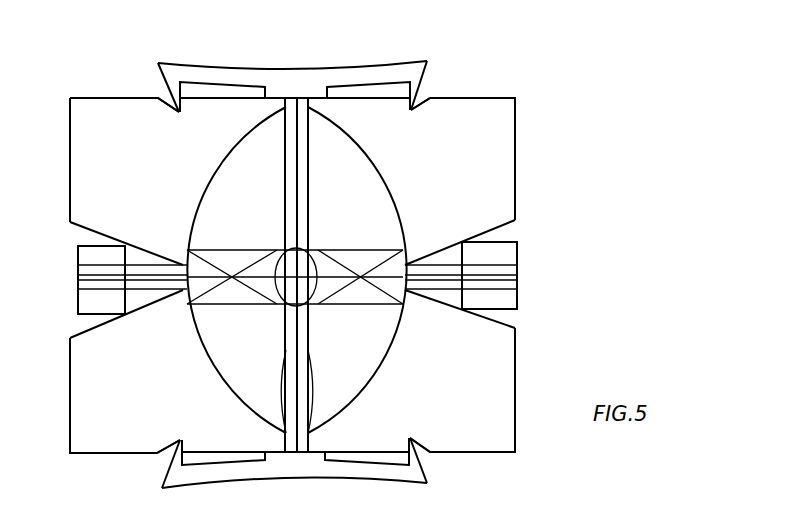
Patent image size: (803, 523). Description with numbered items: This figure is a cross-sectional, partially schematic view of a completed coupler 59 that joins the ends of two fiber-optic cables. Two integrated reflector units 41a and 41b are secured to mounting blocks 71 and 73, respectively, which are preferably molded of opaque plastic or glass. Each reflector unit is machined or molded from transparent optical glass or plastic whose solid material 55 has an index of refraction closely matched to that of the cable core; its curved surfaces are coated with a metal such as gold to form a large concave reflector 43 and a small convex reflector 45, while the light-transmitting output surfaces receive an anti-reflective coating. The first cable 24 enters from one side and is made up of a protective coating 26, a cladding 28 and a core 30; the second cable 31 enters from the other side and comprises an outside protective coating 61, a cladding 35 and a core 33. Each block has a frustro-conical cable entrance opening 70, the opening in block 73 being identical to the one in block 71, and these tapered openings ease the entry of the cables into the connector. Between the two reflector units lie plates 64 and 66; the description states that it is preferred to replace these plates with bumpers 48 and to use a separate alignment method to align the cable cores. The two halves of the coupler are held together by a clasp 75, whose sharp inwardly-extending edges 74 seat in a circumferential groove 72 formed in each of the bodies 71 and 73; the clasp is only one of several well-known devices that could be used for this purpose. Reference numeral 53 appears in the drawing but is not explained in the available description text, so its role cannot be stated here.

The cable 24 is at (72, 316).
The protective coating 26 is at (75, 248).
The cladding 28 is at (78, 277).
The core 30 is at (78, 284).
The cable 31 is at (548, 260).
The core 33 is at (518, 290).
The cladding 35 is at (518, 272).
The reflector unit 41a is at (252, 417).
The reflector unit 41b is at (343, 408).
The large concave reflector 43 is at (224, 162).
The small convex reflector 45 is at (272, 258).
The bumpers 48 is at (281, 236).
The cross flexure 53 is at (191, 226).
The solid material 55 is at (262, 349).
The coupler 59 is at (525, 113).
The outside protective coating 61 is at (517, 244).
The plate 64 is at (286, 104).
The plate 66 is at (308, 104).
The cable entrance opening 70 is at (95, 332).
The mounting block 71 is at (80, 160).
The circumferential groove 72 is at (166, 108).
The mounting block 73 is at (515, 170).
The sharp inwardly-extending edges 74 is at (163, 64).
The clasp 75 is at (309, 40).